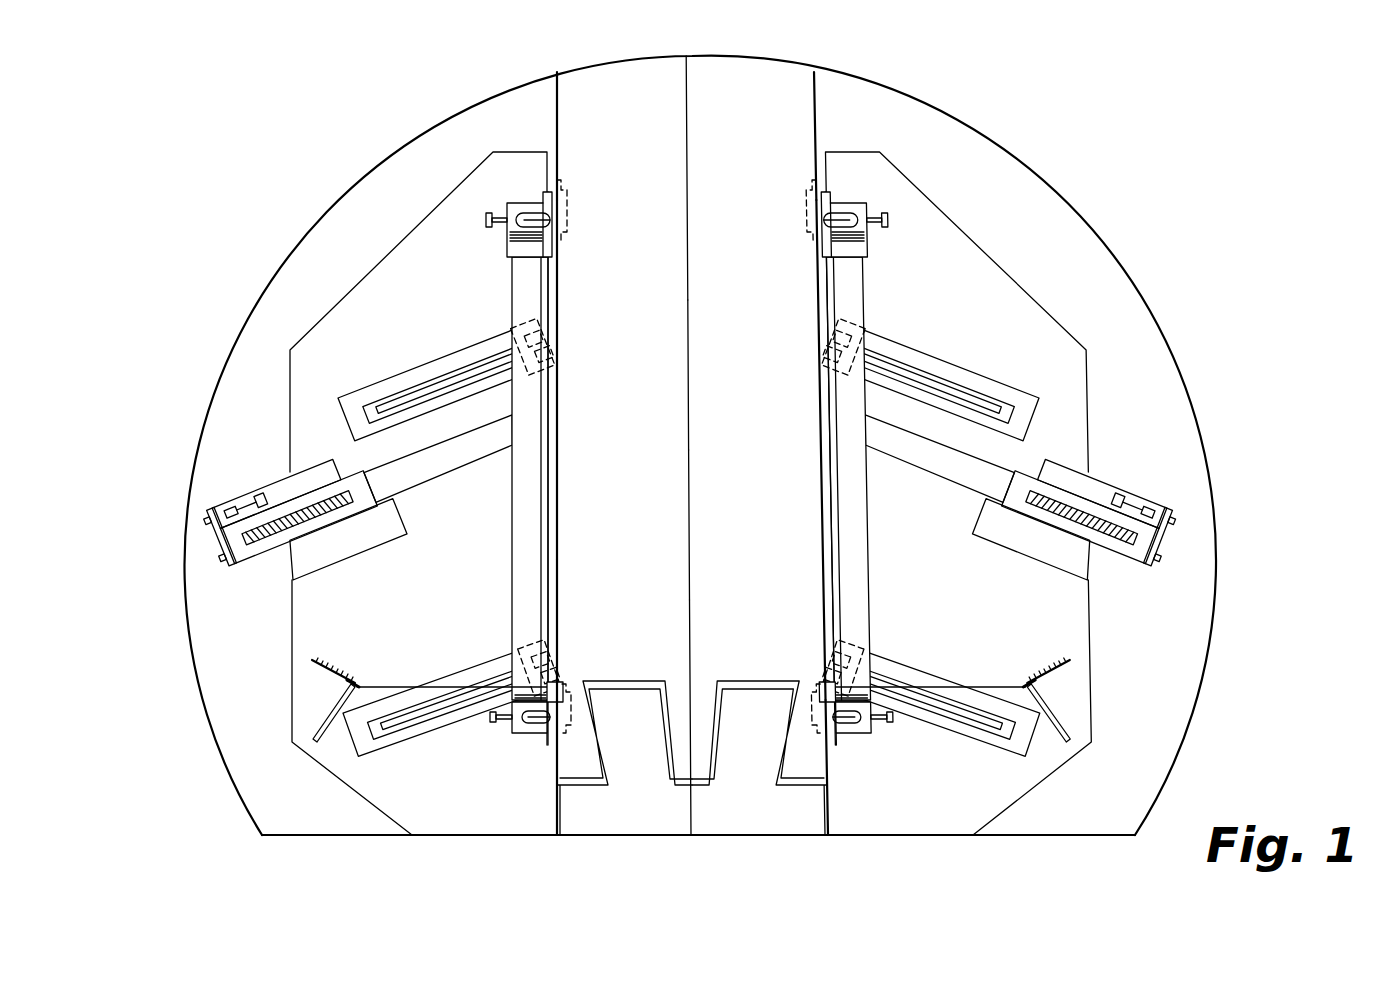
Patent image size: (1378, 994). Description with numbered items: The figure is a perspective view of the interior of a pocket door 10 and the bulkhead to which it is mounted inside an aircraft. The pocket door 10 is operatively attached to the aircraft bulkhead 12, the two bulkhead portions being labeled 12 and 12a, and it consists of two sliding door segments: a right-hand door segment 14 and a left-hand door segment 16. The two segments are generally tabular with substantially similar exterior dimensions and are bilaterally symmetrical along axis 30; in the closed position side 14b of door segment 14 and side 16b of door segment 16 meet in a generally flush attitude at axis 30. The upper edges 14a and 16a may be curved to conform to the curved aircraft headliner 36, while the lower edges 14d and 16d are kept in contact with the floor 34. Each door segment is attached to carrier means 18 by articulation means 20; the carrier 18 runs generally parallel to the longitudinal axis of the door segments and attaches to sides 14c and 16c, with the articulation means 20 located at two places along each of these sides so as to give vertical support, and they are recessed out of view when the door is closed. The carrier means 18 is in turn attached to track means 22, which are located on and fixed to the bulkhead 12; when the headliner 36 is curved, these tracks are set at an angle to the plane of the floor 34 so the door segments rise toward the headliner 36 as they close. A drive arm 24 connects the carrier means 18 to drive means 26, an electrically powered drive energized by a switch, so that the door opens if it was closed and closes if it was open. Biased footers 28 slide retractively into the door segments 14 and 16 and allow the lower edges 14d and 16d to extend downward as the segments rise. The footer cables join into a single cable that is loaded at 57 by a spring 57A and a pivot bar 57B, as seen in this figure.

The pocket door 10 is at (343, 130).
The aircraft bulkhead 12 is at (418, 493).
The second side plate 12a is at (985, 493).
The right-hand door segment 14 is at (779, 380).
The upper edge of door segment 14 14a is at (767, 66).
The side of door segment 14 14b is at (690, 565).
The side of door segment 14 14c is at (820, 612).
The lower edge of door segment 14 14d is at (772, 835).
The left-hand door segment 16 is at (594, 380).
The upper edge of door segment 16 16a is at (602, 68).
The side of door segment 16 16b is at (684, 472).
The side of door segment 16 16c is at (558, 612).
The lower edge of door segment 16 16d is at (607, 835).
The carrier means 18 is at (513, 298).
The articulation means 20 is at (522, 178).
The track means 22 is at (397, 360).
The drive arm 24 is at (435, 480).
The drive means 26 is at (266, 562).
The footers 28 is at (692, 758).
The axis 30 is at (686, 56).
The floor 34 is at (1015, 836).
The curved aircraft headliner 36 is at (920, 107).
The cable loading point 57 is at (318, 663).
The spring 57A is at (1052, 663).
The pivot bar 57B is at (1057, 717).